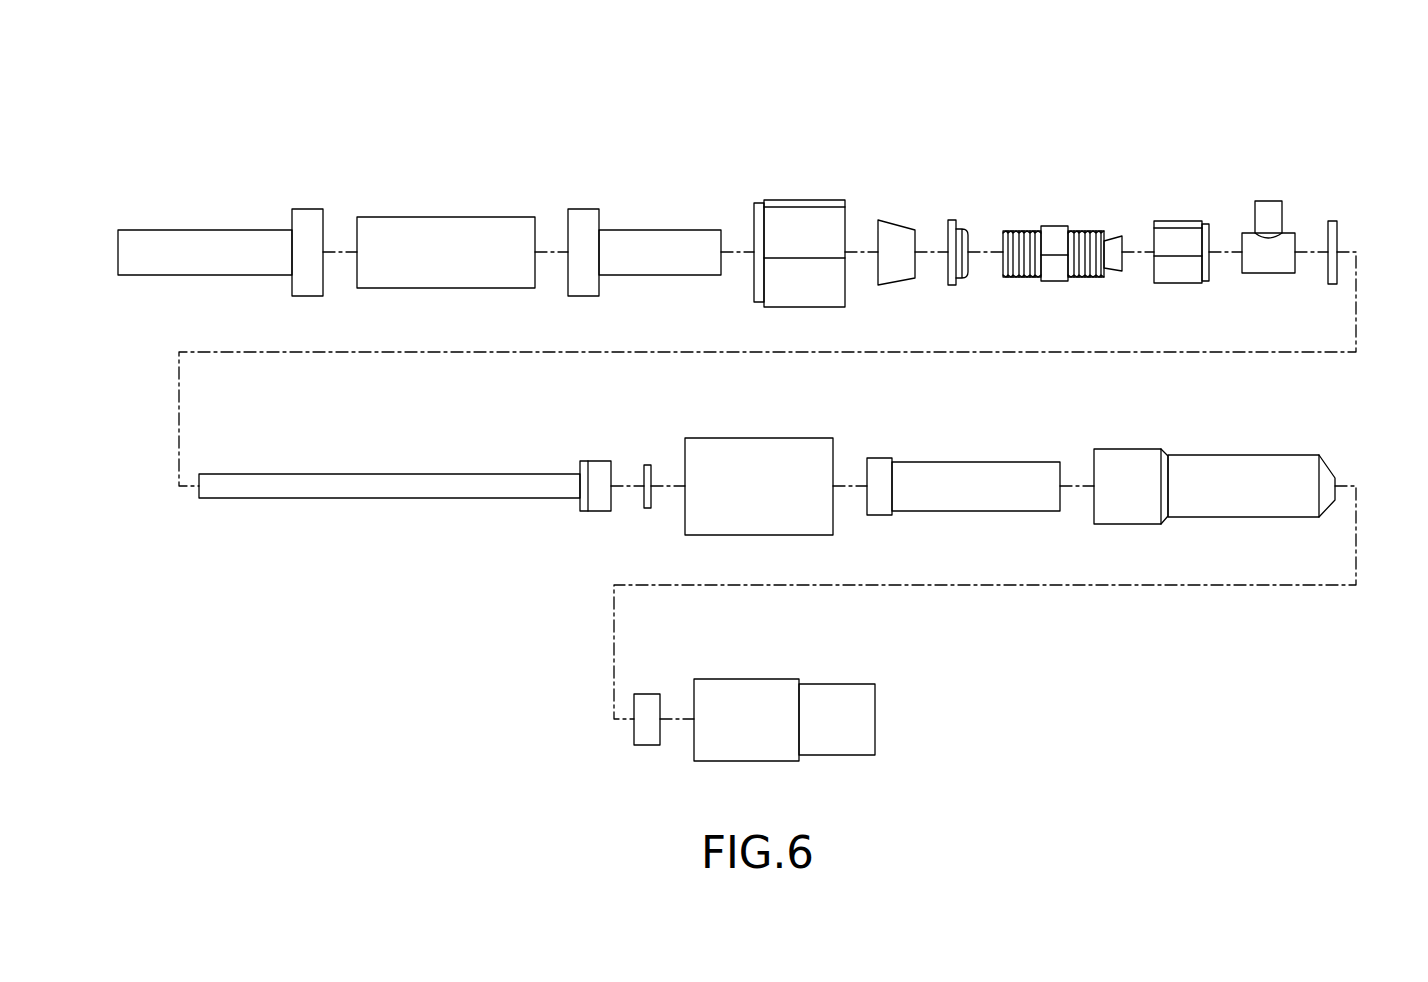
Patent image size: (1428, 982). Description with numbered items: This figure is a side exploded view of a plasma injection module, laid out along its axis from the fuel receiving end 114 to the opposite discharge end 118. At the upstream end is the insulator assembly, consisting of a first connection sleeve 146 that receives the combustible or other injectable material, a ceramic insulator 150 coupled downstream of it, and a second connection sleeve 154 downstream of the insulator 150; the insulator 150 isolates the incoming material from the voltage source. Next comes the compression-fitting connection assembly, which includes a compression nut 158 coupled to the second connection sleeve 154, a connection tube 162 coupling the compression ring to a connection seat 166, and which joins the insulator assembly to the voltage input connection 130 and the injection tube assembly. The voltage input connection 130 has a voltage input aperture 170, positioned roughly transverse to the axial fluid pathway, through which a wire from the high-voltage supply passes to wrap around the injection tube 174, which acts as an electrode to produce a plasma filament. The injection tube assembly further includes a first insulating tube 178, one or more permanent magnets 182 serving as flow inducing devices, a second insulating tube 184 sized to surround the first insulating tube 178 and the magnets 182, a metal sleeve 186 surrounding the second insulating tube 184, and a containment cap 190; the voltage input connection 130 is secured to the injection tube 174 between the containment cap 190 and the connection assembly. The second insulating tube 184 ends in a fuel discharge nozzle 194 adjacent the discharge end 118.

The fuel receiving end 114 is at (163, 213).
The discharge end 118 is at (896, 700).
The voltage input connection 130 is at (1267, 214).
The first connection sleeve 146 is at (237, 244).
The insulator 150 is at (439, 233).
The second connection sleeve 154 is at (642, 234).
The compression nut 158 is at (801, 216).
The connection tube 162 is at (1054, 238).
The connection seat 166 is at (1177, 237).
The voltage input aperture 170 is at (1230, 115).
The injection tube 174 is at (347, 481).
The first insulating tube 178 is at (961, 472).
The permanent magnet 182 is at (612, 468).
The second insulating tube 184 is at (1129, 460).
The sleeve 186 is at (755, 693).
The containment cap 190 is at (751, 448).
The fuel discharge nozzle 194 is at (1334, 478).